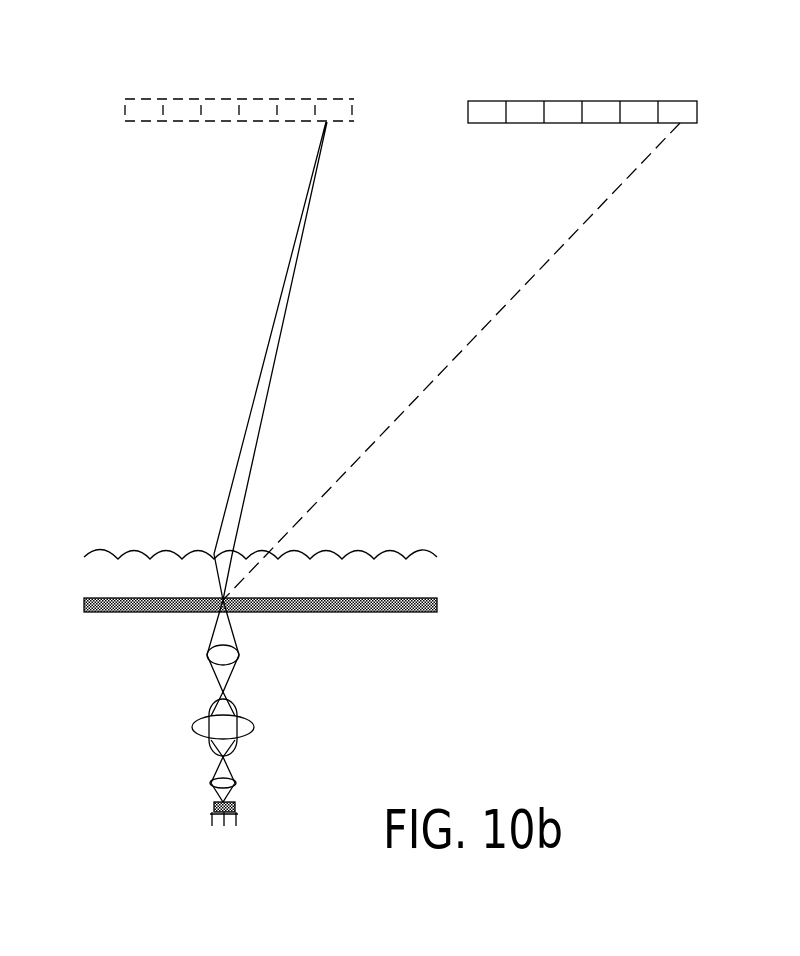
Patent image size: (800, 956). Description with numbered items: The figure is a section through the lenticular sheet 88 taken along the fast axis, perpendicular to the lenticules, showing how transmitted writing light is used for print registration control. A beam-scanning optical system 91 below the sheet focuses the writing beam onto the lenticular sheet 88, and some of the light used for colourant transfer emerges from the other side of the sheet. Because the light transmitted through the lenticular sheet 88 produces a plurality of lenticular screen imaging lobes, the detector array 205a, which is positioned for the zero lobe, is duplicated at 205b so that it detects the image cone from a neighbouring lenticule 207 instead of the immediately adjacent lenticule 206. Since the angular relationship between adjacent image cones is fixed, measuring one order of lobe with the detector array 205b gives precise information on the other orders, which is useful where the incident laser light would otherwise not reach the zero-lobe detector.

The detector array 205a is at (124, 113).
The duplicated detector array 205b is at (699, 104).
The immediately adjacent lenticule 206 is at (213, 553).
The neighbouring lenticule 207 is at (262, 549).
The lenticular sheet 88 is at (381, 548).
The beam-scanning optical system 91 is at (165, 727).